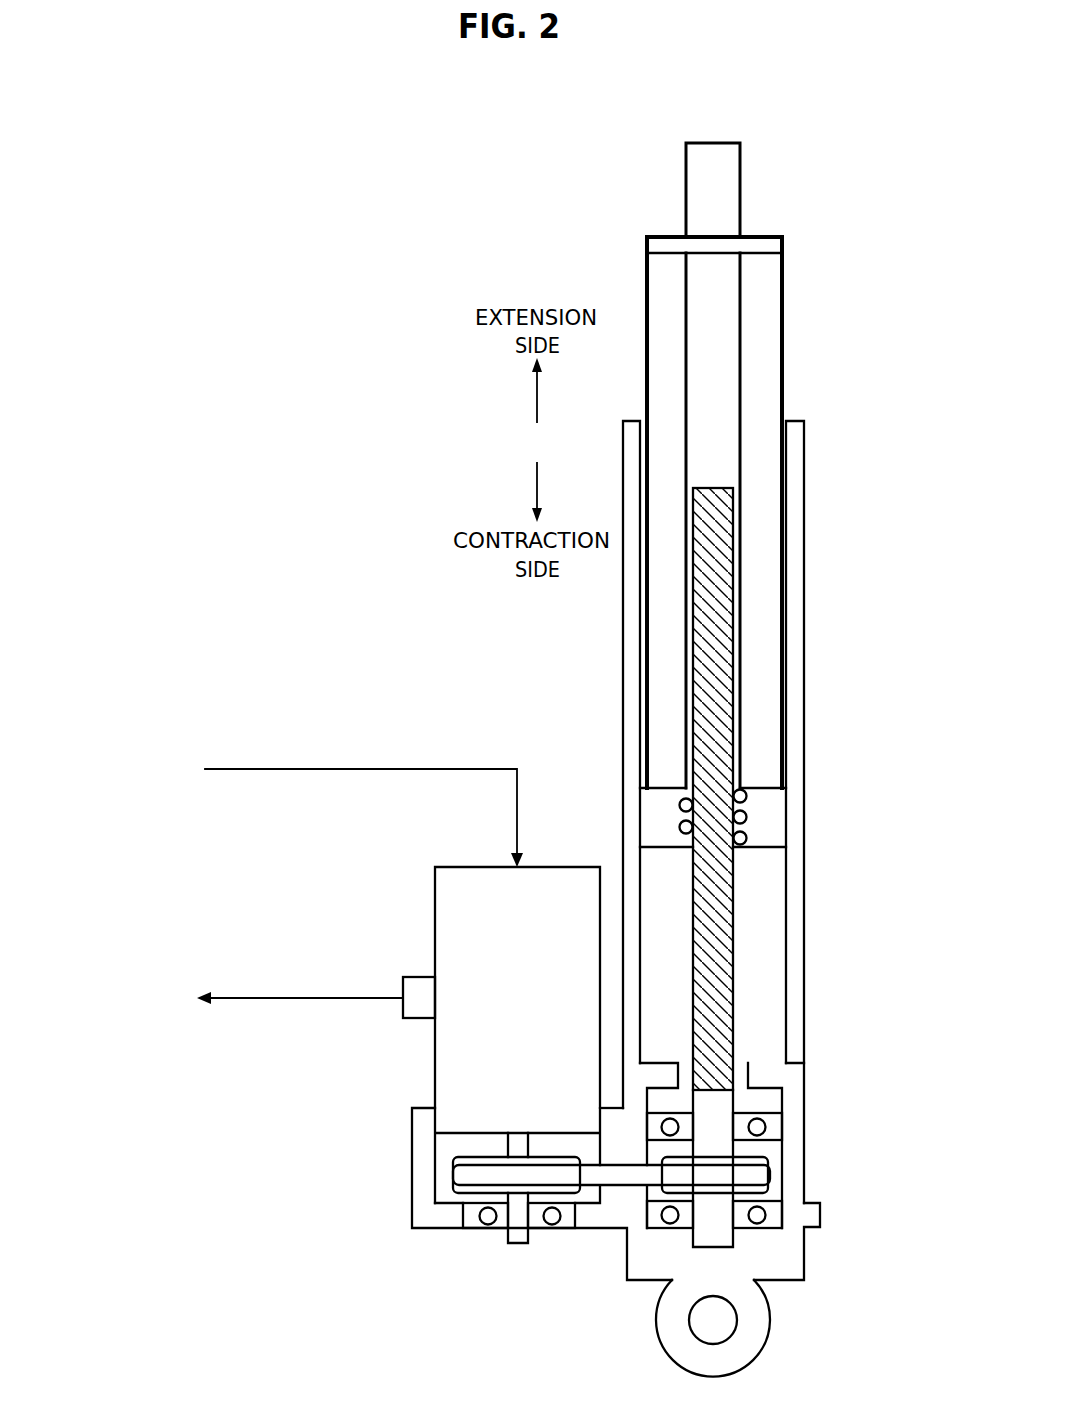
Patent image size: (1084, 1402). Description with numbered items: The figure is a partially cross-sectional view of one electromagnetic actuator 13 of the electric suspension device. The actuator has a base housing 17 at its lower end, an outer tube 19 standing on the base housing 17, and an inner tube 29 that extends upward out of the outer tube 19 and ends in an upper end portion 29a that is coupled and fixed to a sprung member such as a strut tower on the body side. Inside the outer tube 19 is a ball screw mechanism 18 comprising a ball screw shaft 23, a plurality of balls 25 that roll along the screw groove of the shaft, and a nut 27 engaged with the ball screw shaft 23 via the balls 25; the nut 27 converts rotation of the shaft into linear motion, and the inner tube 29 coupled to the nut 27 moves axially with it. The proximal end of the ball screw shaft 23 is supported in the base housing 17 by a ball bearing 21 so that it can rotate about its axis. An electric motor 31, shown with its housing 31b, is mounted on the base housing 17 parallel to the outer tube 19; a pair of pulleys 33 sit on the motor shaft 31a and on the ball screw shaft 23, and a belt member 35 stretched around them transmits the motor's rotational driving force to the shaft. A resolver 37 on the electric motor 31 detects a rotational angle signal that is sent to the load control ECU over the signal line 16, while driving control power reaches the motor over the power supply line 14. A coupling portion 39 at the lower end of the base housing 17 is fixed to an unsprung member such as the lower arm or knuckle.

The electromagnetic actuator 13 is at (826, 260).
The power supply line 14 is at (357, 769).
The signal line 16 is at (295, 997).
The base housing 17 is at (790, 1162).
The ball screw mechanism 18 is at (880, 710).
The outer tube 19 is at (793, 472).
The ball bearing 21 is at (488, 1225).
The ball screw shaft 23 is at (733, 900).
The balls 25 is at (747, 838).
The nut 27 is at (665, 792).
The inner tube 29 is at (763, 332).
The upper end portion 29a is at (723, 190).
The electric motor 31 is at (475, 1005).
The motor shaft 31a is at (518, 1245).
The motor housing 31b is at (450, 898).
The pulleys 33 is at (453, 1188).
The belt member 35 is at (620, 1178).
The resolver 37 is at (420, 990).
The coupling portion 39 is at (755, 1320).